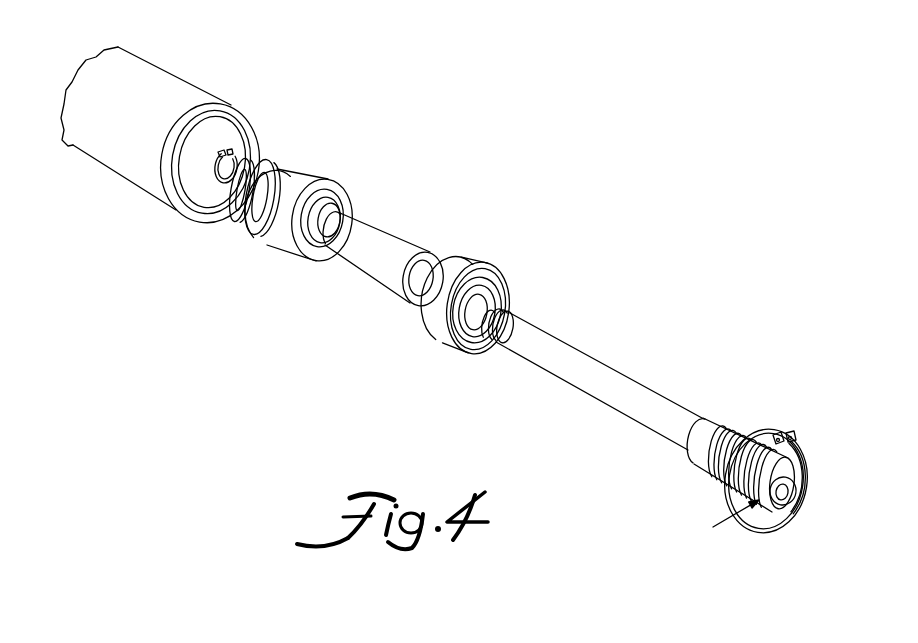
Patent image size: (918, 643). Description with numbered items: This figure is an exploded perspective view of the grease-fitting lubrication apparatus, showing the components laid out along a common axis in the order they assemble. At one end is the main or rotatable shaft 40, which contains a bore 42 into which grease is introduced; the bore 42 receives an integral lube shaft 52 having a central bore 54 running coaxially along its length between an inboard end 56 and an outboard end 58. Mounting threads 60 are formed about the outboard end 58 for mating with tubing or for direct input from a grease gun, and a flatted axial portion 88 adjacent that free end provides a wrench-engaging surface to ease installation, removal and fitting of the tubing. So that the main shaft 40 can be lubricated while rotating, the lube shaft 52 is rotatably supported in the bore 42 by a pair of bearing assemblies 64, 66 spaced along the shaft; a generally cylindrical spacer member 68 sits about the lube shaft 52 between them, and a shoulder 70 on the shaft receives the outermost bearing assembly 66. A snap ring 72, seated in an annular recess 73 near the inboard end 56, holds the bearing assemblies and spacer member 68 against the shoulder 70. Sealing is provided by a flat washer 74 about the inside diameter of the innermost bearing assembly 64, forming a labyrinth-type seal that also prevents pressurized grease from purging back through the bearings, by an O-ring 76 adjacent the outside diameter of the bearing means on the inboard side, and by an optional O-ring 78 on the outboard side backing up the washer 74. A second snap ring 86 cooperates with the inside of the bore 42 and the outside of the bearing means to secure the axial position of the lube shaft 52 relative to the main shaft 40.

The main shaft 40 is at (175, 80).
The bore 42 is at (195, 148).
The lube shaft 52 is at (612, 339).
The central bore 54 is at (789, 497).
The inboard end 56 is at (482, 343).
The outboard end 58 is at (807, 472).
The mounting threads 60 is at (722, 520).
The bearing assembly 64 is at (316, 176).
The bearing assembly 66 is at (473, 262).
The spacer member 68 is at (384, 230).
The shoulder 70 is at (701, 414).
The snap ring 72 is at (236, 142).
The annular recess 73 is at (512, 315).
The flat washer 74 is at (238, 221).
The O-ring 76 is at (280, 163).
The O-ring 78 is at (327, 250).
The second snap ring 86 is at (800, 433).
The flatted axial portion 88 is at (731, 426).